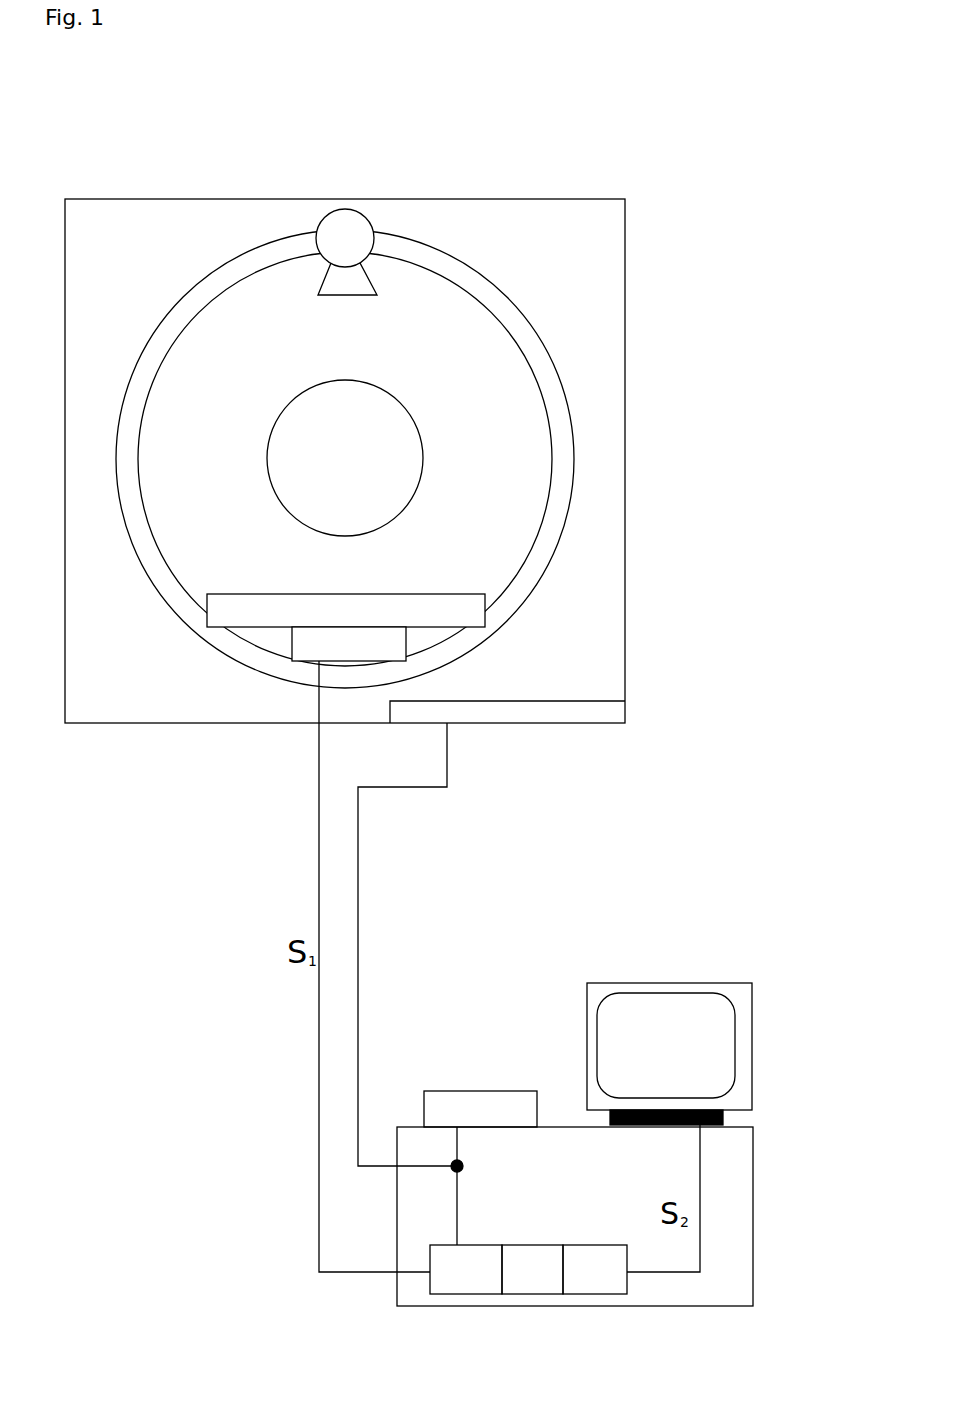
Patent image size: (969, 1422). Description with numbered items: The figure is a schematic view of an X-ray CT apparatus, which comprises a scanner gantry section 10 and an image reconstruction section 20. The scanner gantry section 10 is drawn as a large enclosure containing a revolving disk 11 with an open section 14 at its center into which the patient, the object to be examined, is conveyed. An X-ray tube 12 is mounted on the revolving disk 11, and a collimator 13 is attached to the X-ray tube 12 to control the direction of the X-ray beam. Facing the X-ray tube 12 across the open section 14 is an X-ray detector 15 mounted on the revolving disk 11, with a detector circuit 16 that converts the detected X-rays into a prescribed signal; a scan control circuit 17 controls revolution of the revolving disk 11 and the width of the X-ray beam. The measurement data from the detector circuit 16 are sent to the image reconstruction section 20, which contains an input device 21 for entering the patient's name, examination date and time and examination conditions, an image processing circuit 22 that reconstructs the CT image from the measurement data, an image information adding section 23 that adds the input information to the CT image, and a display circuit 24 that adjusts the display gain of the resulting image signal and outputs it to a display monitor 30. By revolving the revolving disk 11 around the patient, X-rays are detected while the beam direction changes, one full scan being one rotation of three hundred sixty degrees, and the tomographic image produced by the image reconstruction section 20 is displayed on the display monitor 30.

The scanner gantry section 10 is at (624, 217).
The revolving disk 11 is at (495, 448).
The X-ray tube 12 is at (333, 214).
The collimator 13 is at (327, 277).
The open section 14 is at (277, 413).
The X-ray detector 15 is at (207, 613).
The detector circuit 16 is at (291, 651).
The scan control circuit 17 is at (567, 701).
The image reconstruction section 20 is at (753, 1172).
The input device 21 is at (483, 1091).
The image processing circuit 22 is at (458, 1294).
The image information adding section 23 is at (536, 1294).
The display circuit 24 is at (598, 1294).
The display monitor 30 is at (733, 1000).